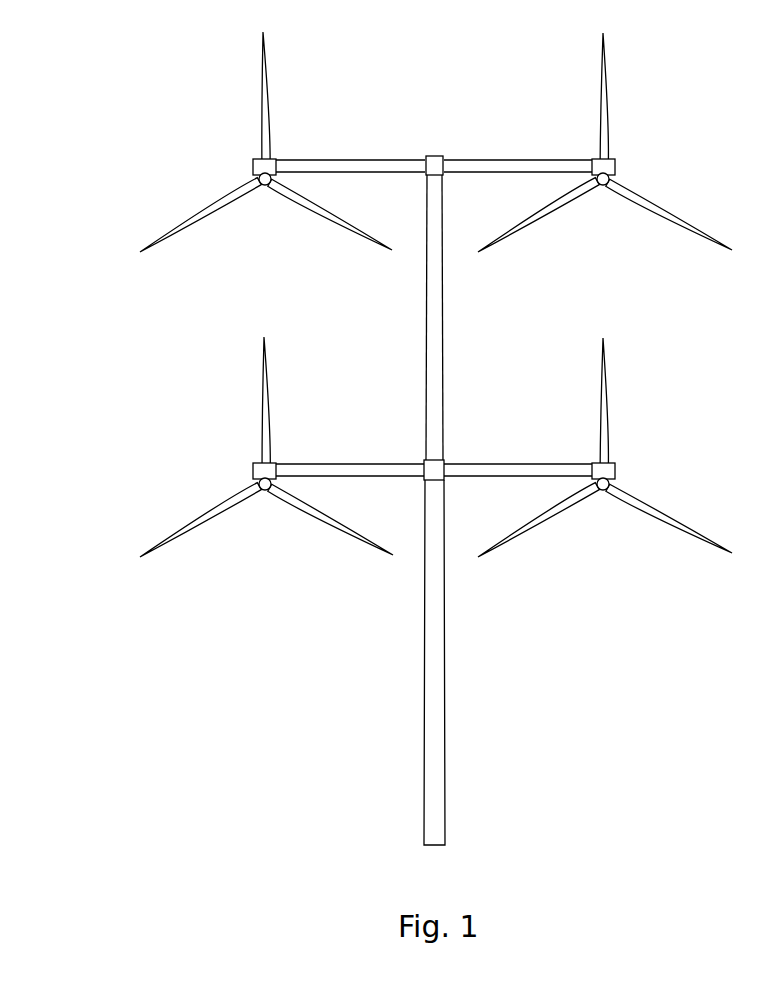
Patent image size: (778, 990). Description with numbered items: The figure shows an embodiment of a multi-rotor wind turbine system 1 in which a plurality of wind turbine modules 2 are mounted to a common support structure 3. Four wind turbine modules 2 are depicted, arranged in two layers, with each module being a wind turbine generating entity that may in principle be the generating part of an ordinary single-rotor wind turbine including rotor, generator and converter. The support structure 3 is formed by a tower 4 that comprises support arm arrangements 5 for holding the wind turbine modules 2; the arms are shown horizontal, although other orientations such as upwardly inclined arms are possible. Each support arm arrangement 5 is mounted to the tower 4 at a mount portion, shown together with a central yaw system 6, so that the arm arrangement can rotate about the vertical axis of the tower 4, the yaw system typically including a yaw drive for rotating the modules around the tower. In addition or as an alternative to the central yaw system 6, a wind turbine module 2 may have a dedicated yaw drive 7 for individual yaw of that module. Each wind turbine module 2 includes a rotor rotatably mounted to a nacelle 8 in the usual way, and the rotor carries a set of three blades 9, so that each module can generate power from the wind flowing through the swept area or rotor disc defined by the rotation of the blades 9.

The multi-rotor wind turbine system 1 is at (127, 120).
The wind turbine module 2 is at (573, 265).
The support structure 3 is at (455, 368).
The tower 4 is at (423, 663).
The support arm arrangement 5 is at (493, 160).
The central yaw system 6 is at (425, 157).
The dedicated yaw drive 7 is at (622, 168).
The nacelle 8 is at (610, 482).
The blade 9 is at (608, 117).